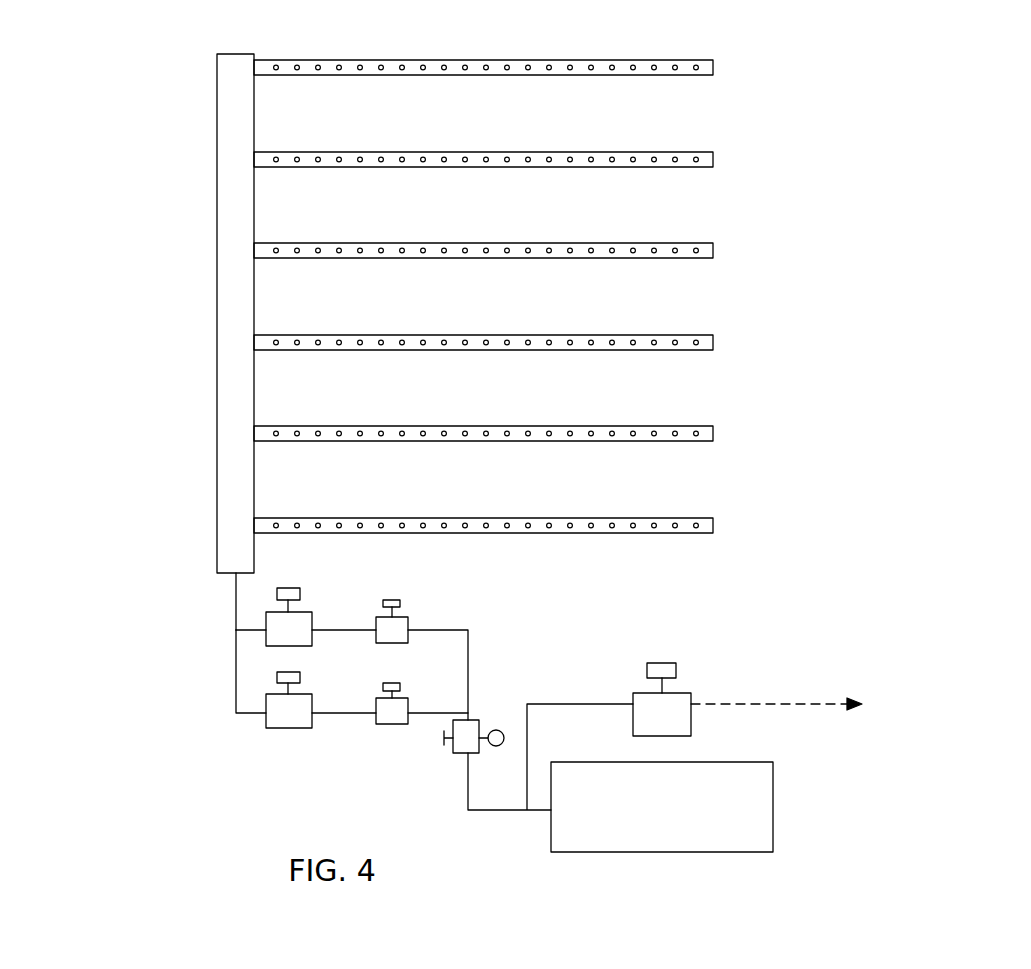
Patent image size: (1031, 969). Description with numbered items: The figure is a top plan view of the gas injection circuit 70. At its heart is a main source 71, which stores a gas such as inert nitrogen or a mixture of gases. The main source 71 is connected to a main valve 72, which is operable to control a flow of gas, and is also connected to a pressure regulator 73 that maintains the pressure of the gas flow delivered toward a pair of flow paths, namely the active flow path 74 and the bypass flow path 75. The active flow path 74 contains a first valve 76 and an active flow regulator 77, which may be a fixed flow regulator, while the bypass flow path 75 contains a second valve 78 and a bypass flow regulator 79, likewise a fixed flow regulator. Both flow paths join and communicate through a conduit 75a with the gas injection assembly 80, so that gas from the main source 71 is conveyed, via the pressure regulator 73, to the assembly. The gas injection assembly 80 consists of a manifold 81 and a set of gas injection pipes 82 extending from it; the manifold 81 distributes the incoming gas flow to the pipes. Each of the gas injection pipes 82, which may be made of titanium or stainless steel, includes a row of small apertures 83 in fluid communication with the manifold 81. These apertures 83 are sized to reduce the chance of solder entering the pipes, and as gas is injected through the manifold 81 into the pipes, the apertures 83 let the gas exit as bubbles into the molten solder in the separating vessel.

The gas injection circuit 70 is at (933, 104).
The main source 71 is at (662, 807).
The main valve 72 is at (680, 702).
The pressure regulator 73 is at (472, 725).
The active flow path 74 is at (246, 628).
The bypass flow path 75 is at (233, 688).
The conduit 75a is at (233, 580).
The first valve 76 is at (395, 628).
The active flow regulator 77 is at (302, 628).
The second valve 78 is at (387, 718).
The bypass flow regulator 79 is at (277, 718).
The gas injection assembly 80 is at (157, 508).
The manifold 81 is at (217, 418).
The gas injection pipes 82 is at (710, 252).
The apertures 83 is at (508, 157).